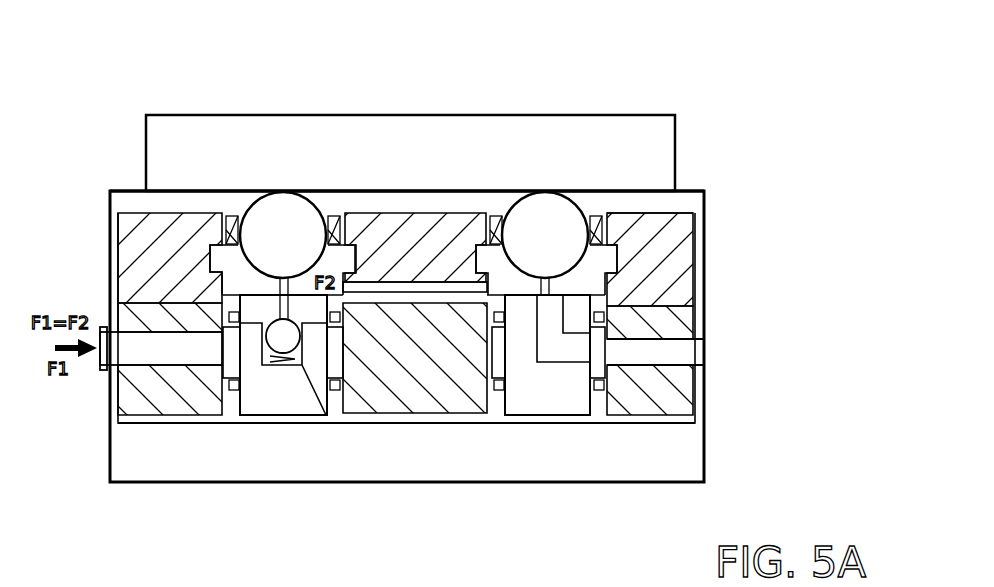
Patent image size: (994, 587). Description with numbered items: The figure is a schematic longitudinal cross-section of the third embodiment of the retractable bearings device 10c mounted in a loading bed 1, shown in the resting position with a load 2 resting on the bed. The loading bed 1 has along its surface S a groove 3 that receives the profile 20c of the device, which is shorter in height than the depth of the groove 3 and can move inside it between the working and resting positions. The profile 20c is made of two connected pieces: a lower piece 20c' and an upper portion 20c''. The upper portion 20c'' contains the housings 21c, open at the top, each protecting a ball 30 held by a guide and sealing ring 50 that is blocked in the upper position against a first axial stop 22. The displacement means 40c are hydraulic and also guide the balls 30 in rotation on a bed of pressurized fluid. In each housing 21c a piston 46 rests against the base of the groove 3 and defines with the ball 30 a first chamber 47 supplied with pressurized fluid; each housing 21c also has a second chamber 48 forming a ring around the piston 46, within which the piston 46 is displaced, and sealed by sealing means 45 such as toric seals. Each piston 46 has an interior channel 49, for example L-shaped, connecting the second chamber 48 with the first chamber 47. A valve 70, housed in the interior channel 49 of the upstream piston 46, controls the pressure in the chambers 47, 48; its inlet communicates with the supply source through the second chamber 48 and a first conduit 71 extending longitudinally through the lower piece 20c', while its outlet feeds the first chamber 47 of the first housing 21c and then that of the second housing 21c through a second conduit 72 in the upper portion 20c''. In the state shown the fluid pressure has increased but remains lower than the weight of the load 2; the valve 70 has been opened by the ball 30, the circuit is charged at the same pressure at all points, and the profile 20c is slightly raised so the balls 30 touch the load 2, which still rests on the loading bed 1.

The loading bed 1 is at (110, 205).
The load 2 is at (403, 160).
The groove 3 is at (700, 440).
The retractable bearings device 10c is at (694, 130).
The profile 20c is at (459, 254).
The lower piece 20c' is at (462, 368).
The upper portion 20c'' is at (465, 305).
The housing 21c is at (588, 206).
The first axial stop 22 is at (207, 248).
The ball 30 is at (277, 239).
The displacement means 40c is at (151, 384).
The sealing means 45 is at (497, 386).
The piston 46 is at (277, 410).
The first chamber 47 is at (240, 270).
The second chamber 48 is at (490, 360).
The interior channel 49 is at (327, 385).
The guide and sealing ring 50 is at (620, 231).
The valve 70 is at (258, 355).
The first conduit 71 is at (140, 356).
The second conduit 72 is at (447, 290).
The surface S is at (127, 188).